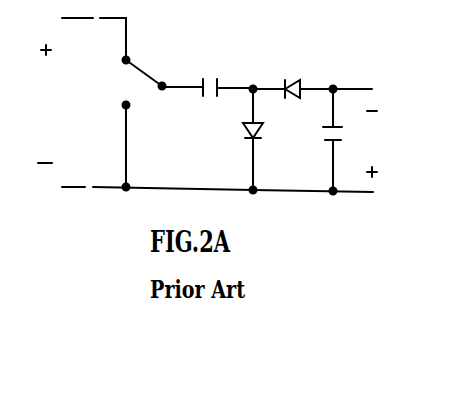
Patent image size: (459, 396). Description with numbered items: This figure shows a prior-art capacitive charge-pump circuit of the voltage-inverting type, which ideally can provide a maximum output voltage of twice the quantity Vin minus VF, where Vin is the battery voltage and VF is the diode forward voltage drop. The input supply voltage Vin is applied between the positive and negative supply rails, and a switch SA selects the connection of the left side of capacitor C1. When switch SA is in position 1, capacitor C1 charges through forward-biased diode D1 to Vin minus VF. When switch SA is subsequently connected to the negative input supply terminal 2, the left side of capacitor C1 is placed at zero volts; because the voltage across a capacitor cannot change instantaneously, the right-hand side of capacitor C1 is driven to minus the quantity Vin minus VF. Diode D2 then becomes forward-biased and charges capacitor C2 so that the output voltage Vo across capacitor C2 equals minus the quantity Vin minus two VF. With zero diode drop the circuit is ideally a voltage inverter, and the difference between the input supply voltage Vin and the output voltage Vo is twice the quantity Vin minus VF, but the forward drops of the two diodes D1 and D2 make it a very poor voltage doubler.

The switch position 1 is at (117, 54).
The negative input supply terminal 2 is at (117, 143).
The switch SA is at (146, 63).
The capacitor C1 is at (207, 66).
The capacitor C2 is at (321, 142).
The diode D1 is at (236, 141).
The diode D2 is at (293, 106).
The input supply voltage Vin is at (49, 121).
The output voltage Vo is at (384, 144).